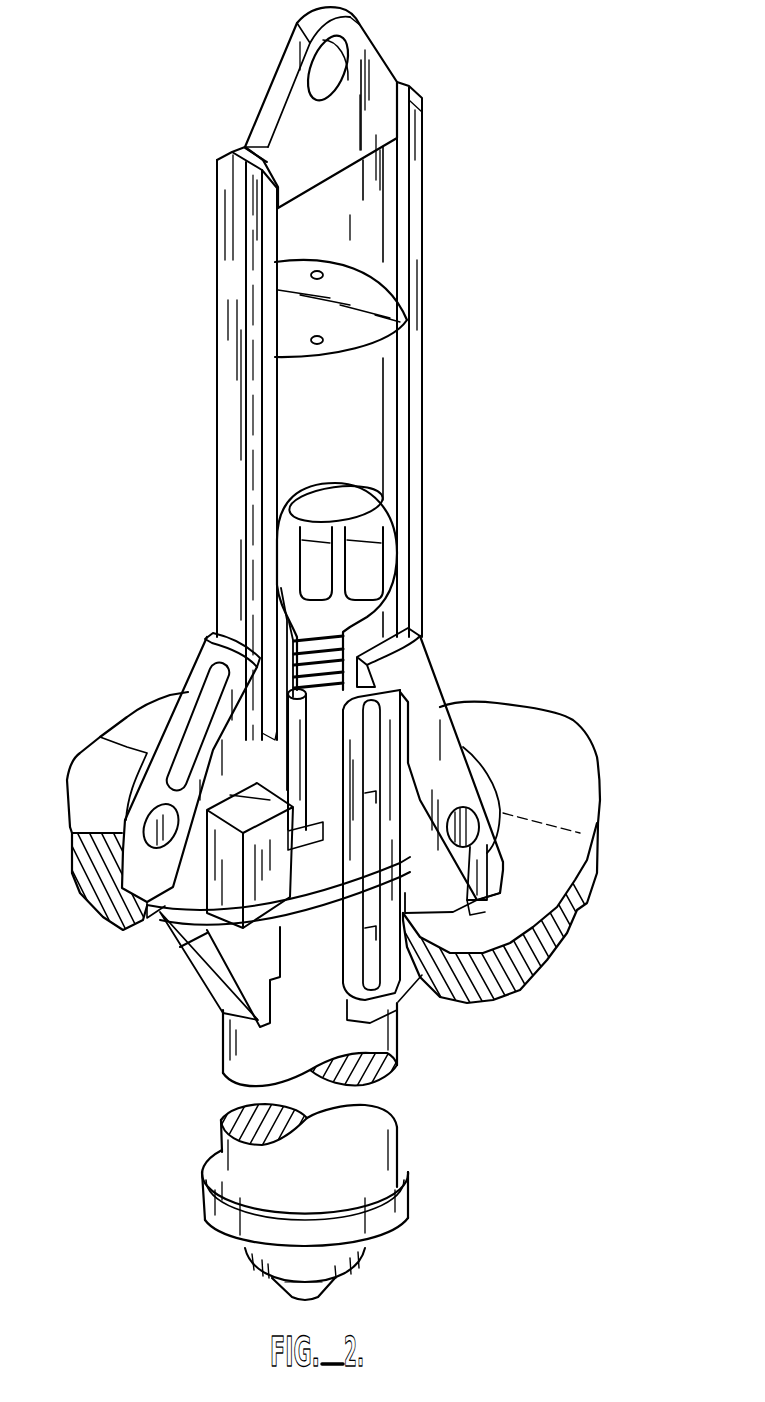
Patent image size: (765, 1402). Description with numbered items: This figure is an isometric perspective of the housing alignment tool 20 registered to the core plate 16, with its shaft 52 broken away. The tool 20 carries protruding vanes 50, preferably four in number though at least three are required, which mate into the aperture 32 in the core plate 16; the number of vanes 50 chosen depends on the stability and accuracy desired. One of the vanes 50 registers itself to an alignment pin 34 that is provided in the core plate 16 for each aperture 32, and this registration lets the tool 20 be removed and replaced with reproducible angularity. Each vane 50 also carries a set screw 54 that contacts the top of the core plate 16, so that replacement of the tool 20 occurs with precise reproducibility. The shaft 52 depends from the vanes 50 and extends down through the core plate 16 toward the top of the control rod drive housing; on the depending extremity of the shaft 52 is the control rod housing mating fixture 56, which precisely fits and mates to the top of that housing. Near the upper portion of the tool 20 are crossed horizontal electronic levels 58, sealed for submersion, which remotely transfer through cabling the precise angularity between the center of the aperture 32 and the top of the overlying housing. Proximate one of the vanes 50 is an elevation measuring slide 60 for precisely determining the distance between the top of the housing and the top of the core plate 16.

The housing alignment tool 20 is at (166, 372).
The crossed horizontal electronic levels 58 is at (332, 497).
The elevation measuring slide 60 is at (306, 724).
The protruding vanes 50 is at (454, 794).
The aperture 32 is at (477, 777).
The alignment pin 34 is at (490, 908).
The set screw 54 is at (137, 834).
The core plate 16 is at (572, 735).
The shaft 52 is at (397, 1037).
The control rod housing mating fixture 56 is at (410, 1201).